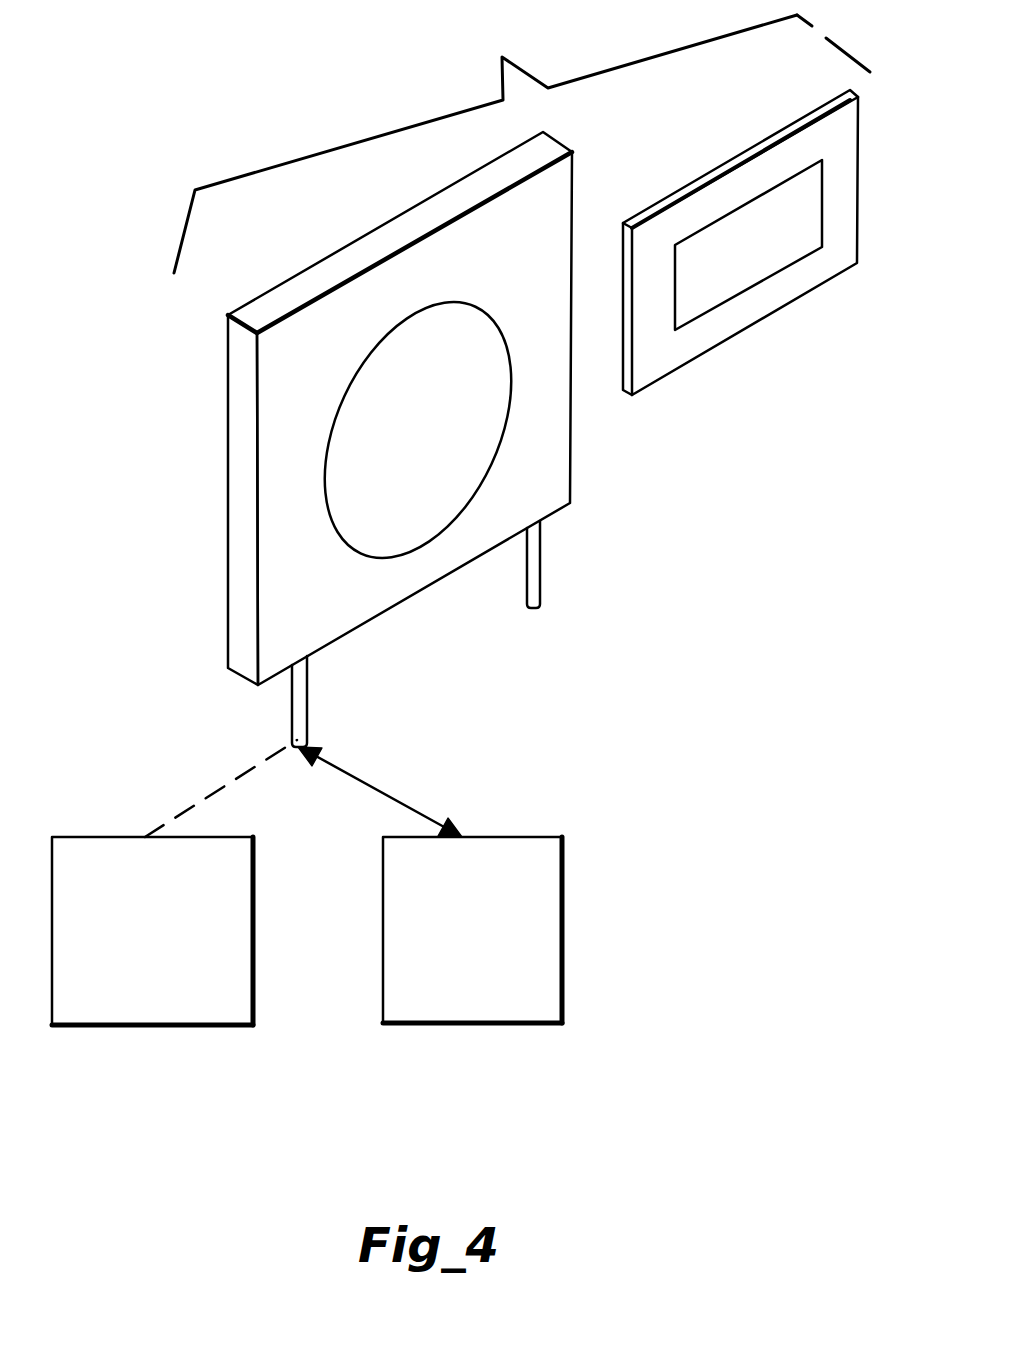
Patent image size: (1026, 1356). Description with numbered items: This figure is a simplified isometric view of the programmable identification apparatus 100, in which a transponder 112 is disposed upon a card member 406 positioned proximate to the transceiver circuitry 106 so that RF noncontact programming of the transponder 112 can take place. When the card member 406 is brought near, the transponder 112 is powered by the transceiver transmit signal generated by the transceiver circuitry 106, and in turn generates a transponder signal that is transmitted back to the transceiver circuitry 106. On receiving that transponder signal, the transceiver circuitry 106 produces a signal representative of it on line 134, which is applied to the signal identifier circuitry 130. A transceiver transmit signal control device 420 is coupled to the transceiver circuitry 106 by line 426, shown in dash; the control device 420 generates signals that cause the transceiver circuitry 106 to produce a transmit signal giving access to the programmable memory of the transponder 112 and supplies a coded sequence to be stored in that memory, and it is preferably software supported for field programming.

The programmable identification apparatus 100 is at (522, 144).
The transceiver circuitry 106 is at (248, 390).
The transponder 112 is at (697, 320).
The card member 406 is at (817, 290).
The line 426 is at (225, 790).
The line 134 is at (405, 798).
The transceiver transmit signal control device 420 is at (140, 1025).
The signal identifier circuitry 130 is at (563, 995).